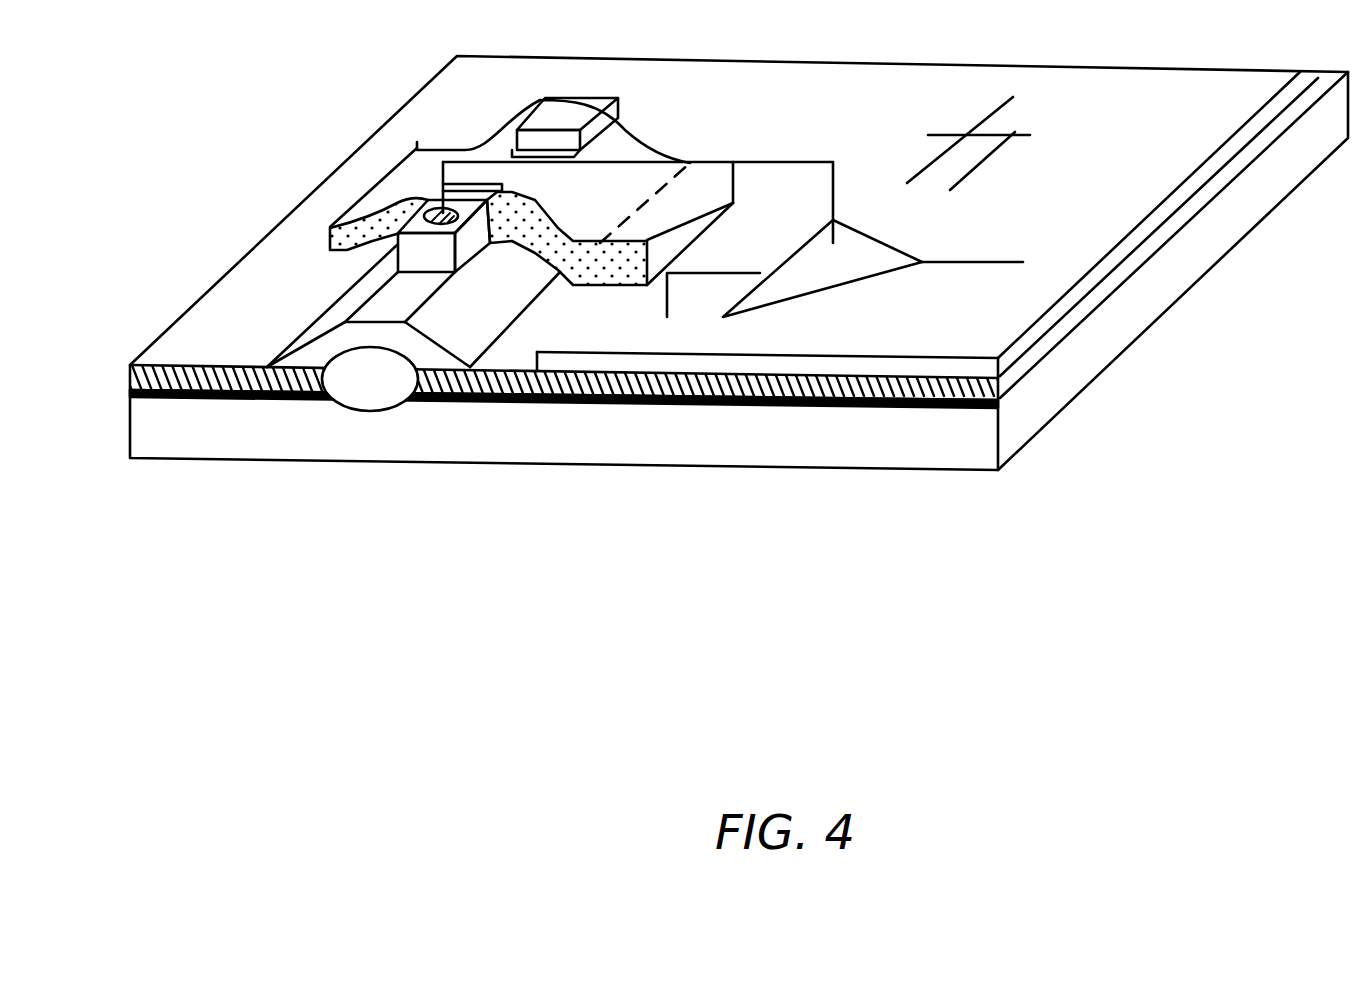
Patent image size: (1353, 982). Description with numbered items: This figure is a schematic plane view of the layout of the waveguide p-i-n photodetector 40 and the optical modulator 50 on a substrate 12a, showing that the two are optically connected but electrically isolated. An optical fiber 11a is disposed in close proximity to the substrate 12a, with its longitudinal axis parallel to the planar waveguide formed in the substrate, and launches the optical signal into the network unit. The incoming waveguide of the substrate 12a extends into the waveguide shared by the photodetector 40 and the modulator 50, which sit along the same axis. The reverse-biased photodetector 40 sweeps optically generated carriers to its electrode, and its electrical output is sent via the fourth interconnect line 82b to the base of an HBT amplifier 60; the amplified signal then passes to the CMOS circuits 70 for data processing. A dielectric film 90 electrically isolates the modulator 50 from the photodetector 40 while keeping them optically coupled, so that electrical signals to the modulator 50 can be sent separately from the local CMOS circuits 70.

The optical fiber 11a is at (372, 392).
The substrate with incoming waveguide 12a is at (295, 331).
The photodetector 40 is at (478, 250).
The optical modulator 50 is at (540, 99).
The HBT amplifier 60 is at (862, 270).
The CMOS circuits 70 is at (1045, 148).
The fourth interconnect line 82b is at (813, 155).
The dielectric film 90 is at (388, 196).